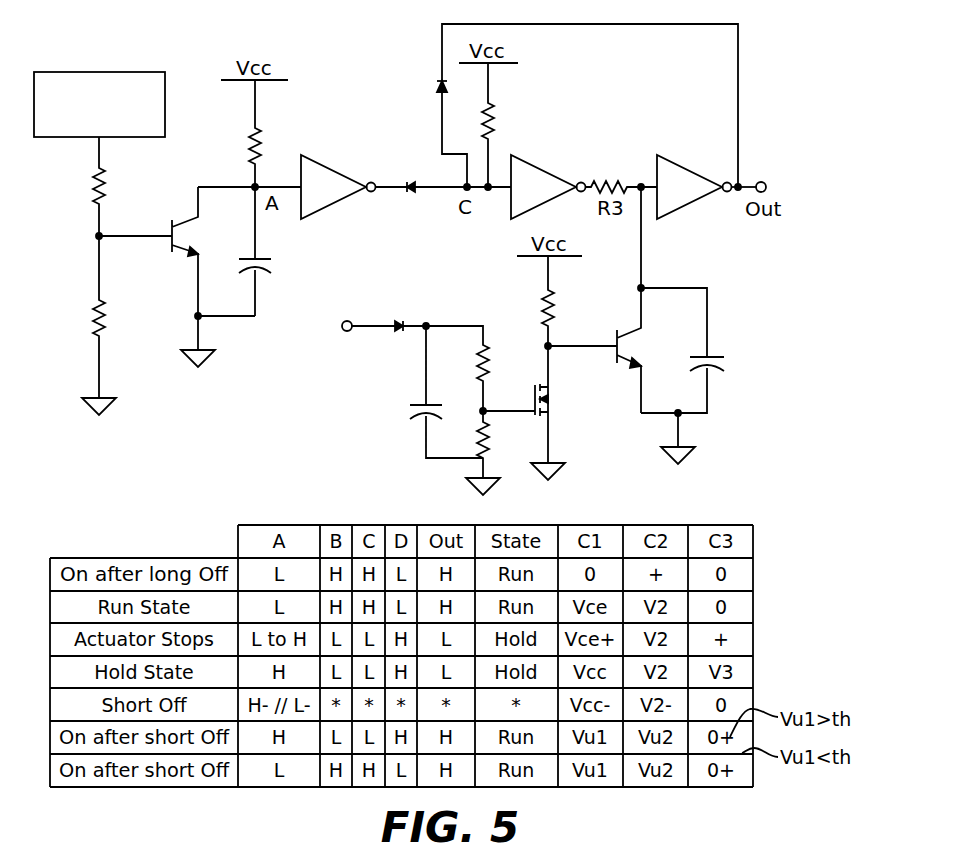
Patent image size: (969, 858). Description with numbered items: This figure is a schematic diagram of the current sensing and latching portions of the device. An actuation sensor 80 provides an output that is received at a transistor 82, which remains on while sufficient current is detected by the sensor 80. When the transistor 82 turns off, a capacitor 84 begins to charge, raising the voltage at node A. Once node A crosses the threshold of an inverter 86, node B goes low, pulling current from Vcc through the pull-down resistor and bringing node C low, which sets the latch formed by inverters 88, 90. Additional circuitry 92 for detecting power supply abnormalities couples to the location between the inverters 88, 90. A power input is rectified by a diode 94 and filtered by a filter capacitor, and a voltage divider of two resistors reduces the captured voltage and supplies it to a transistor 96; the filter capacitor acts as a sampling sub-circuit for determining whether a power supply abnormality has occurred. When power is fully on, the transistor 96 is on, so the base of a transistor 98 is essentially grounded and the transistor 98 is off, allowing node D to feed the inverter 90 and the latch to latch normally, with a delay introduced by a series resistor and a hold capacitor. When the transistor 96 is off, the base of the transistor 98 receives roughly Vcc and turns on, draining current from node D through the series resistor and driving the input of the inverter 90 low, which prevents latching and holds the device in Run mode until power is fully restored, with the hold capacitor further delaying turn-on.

The actuation sensor 80 is at (125, 73).
The transistor 82 is at (178, 250).
The capacitor 84 is at (257, 266).
The inverter 86 is at (322, 167).
The inverter 88 is at (539, 167).
The inverter 90 is at (665, 167).
The additional circuitry for detecting power supply abnormalities 92 is at (699, 276).
The diode 94 is at (384, 351).
The transistor 96 is at (565, 398).
The transistor 98 is at (638, 327).